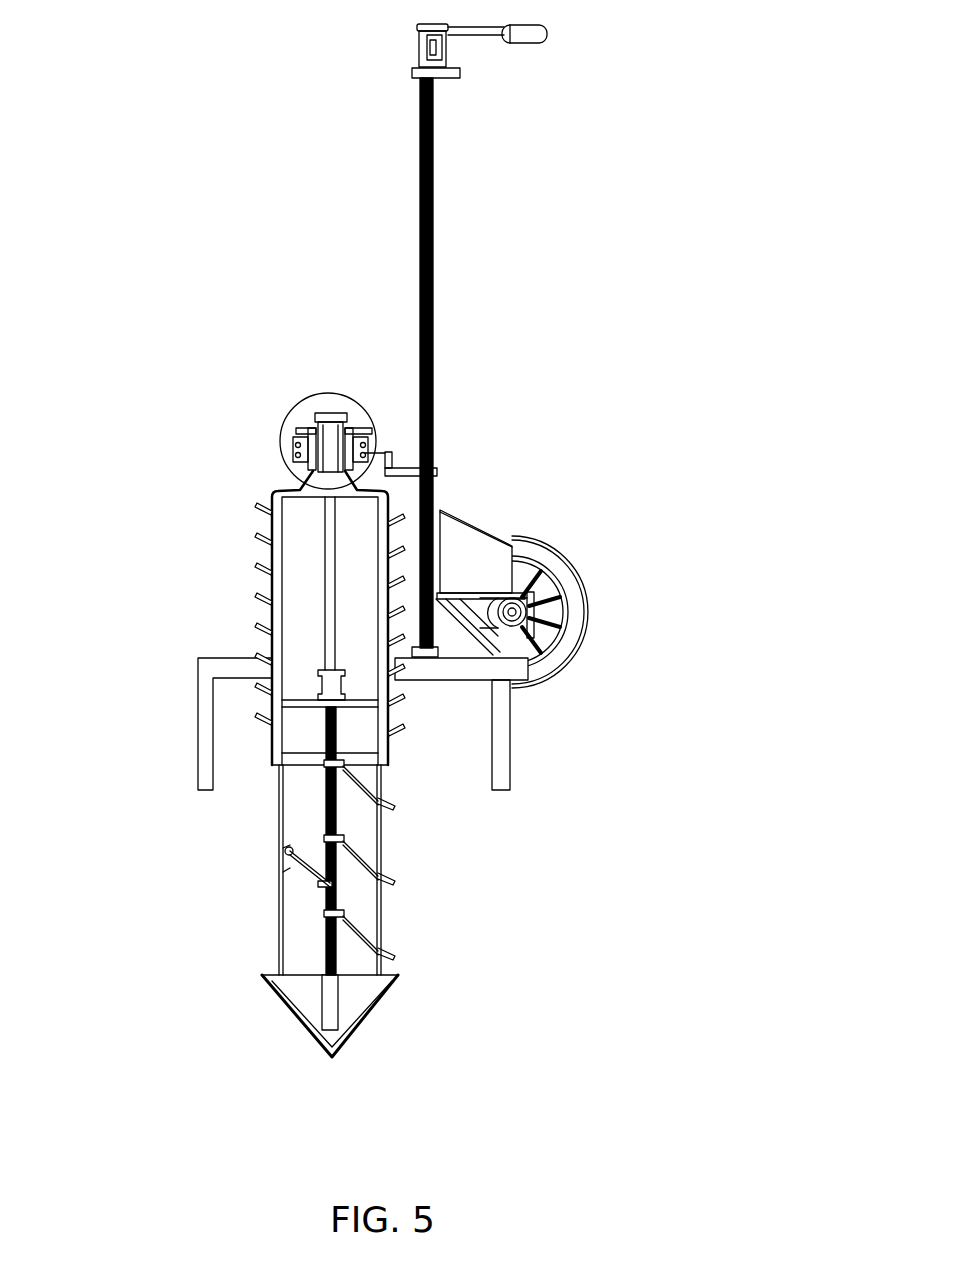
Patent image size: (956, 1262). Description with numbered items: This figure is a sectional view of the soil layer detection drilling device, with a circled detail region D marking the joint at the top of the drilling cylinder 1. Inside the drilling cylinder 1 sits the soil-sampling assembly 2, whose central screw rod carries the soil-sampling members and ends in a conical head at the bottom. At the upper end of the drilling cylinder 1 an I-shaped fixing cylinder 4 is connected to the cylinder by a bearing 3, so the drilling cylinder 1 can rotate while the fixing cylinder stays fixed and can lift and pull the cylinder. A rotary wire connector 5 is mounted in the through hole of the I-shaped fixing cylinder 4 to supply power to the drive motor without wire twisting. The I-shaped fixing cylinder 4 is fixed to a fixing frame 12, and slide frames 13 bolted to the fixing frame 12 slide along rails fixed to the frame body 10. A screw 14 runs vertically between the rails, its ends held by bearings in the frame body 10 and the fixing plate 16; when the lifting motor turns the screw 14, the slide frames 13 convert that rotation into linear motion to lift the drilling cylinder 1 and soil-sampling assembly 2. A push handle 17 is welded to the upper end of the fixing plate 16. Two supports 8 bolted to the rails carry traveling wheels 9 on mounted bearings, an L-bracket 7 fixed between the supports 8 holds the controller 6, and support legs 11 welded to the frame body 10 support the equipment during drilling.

The drilling cylinder 1 is at (270, 537).
The soil-sampling assembly 2 is at (282, 892).
The bearing 3 is at (303, 432).
The I-shaped fixing cylinder 4 is at (307, 423).
The rotary wire connector 5 is at (317, 417).
The controller 6 is at (490, 538).
The L-bracket 7 is at (437, 490).
The support 8 is at (515, 647).
The traveling wheel 9 is at (578, 596).
The frame body 10 is at (463, 672).
The support leg 11 is at (205, 707).
The fixing frame 12 is at (352, 415).
The slide frame 13 is at (433, 422).
The screw 14 is at (433, 345).
The fixing plate 16 is at (442, 78).
The push handle 17 is at (523, 35).
The detail region D is at (283, 456).